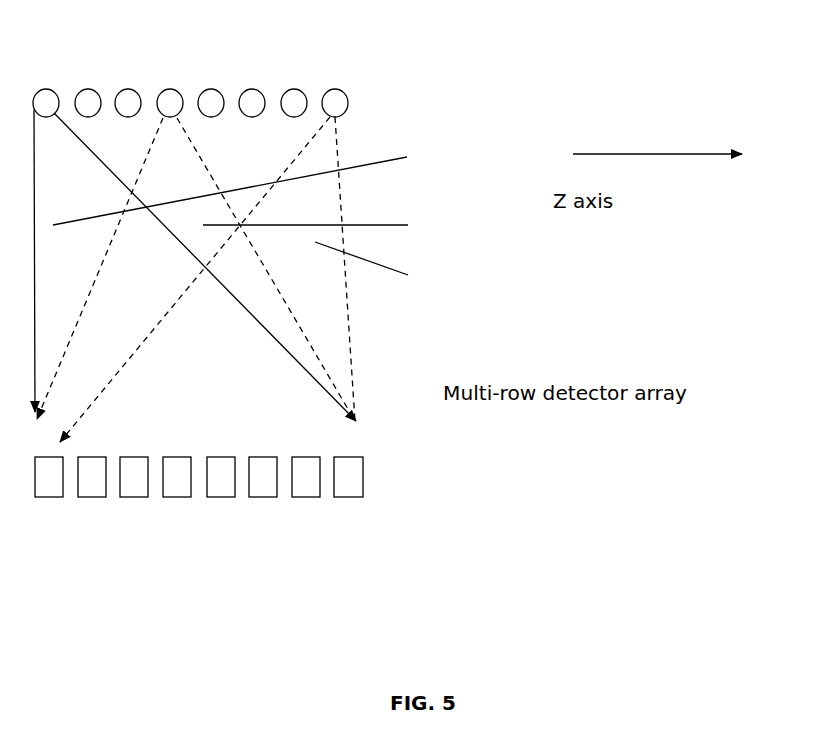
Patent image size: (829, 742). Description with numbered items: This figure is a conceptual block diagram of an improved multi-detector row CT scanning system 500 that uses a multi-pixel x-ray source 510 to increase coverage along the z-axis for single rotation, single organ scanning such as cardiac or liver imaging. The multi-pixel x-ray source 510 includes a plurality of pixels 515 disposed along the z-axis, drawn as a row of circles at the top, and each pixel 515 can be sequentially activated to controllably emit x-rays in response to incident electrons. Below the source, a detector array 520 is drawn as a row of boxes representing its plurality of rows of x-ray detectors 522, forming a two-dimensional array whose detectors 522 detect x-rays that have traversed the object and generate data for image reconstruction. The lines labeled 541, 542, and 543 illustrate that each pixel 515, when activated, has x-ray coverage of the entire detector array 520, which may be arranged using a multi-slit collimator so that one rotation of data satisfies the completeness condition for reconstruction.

The multi-detector row CT scanning system 500 is at (500, 258).
The multi-pixel x-ray source 510 is at (277, 55).
The pixel 515 is at (88, 89).
The detector array 520 is at (242, 528).
The x-ray detector 522 is at (92, 497).
The x-ray coverage 541 is at (256, 179).
The x-ray coverage 542 is at (331, 226).
The x-ray coverage 543 is at (387, 265).